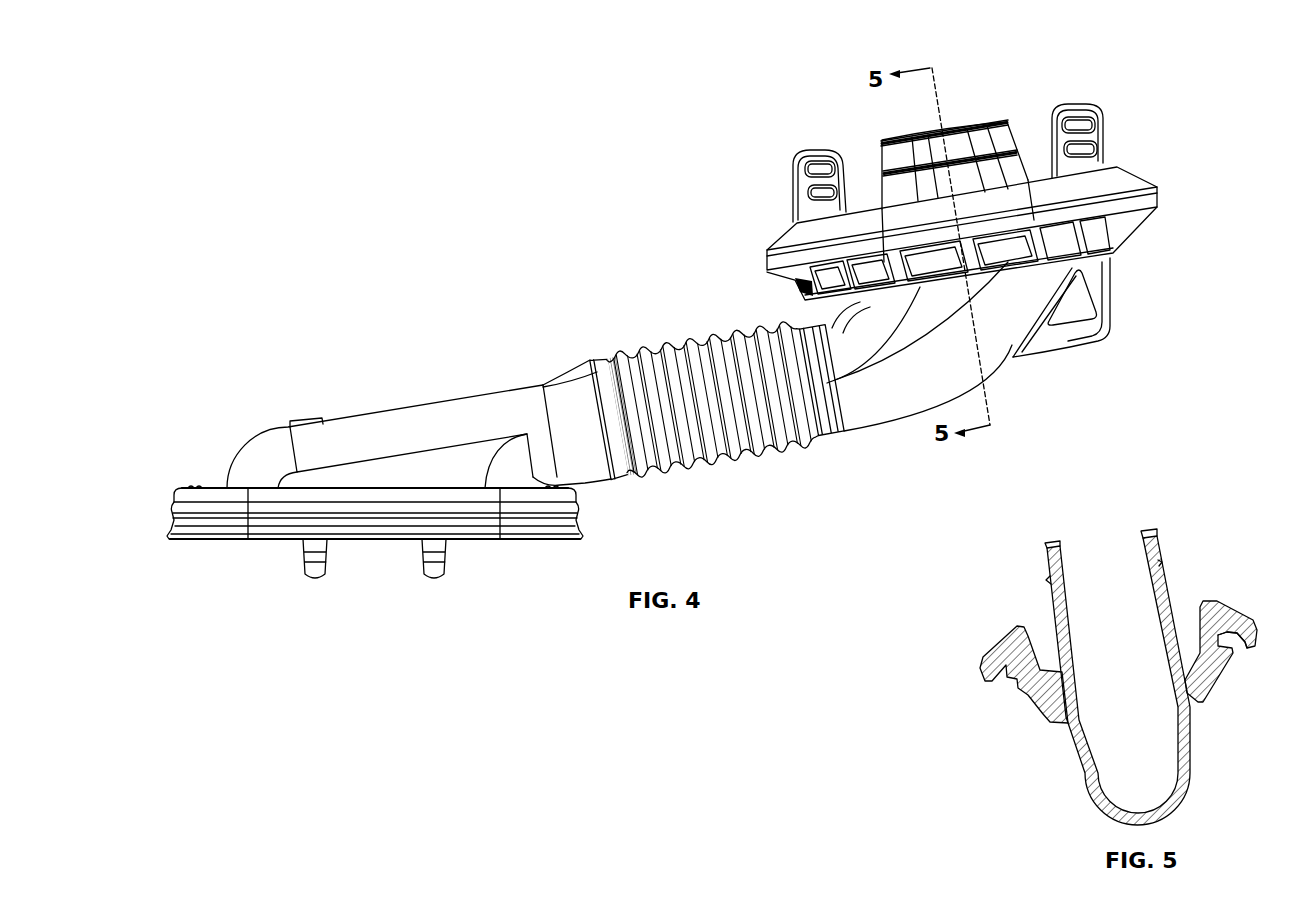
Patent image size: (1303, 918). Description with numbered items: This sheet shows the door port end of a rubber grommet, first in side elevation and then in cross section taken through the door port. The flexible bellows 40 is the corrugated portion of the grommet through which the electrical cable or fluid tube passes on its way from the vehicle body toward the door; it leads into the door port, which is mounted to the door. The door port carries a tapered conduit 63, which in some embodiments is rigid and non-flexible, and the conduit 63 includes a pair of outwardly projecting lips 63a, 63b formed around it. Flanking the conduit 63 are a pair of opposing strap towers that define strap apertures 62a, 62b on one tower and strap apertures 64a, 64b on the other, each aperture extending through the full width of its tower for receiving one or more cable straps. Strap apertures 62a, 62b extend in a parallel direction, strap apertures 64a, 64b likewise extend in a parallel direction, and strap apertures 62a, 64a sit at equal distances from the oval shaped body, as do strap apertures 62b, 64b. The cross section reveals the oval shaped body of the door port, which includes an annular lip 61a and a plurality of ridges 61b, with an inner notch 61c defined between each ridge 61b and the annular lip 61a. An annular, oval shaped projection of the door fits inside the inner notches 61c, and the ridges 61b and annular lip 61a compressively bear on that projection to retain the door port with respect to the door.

In FIG. 4, the flexible bellows 40 is at (697, 492).
In FIG. 4, the strap aperture 62a is at (817, 169).
In FIG. 4, the strap aperture 62b is at (808, 197).
In FIG. 5, the conduit 63 is at (1060, 613).
In FIG. 4, the outwardly projecting lip 63a is at (983, 121).
In FIG. 4, the outwardly projecting lip 63b is at (881, 173).
In FIG. 4, the strap aperture 64a is at (1077, 121).
In FIG. 4, the strap aperture 64b is at (1090, 148).
In FIG. 5, the annular lip 61a is at (1220, 607).
In FIG. 5, the ridge 61b is at (1013, 679).
In FIG. 5, the inner notch 61c is at (1235, 642).